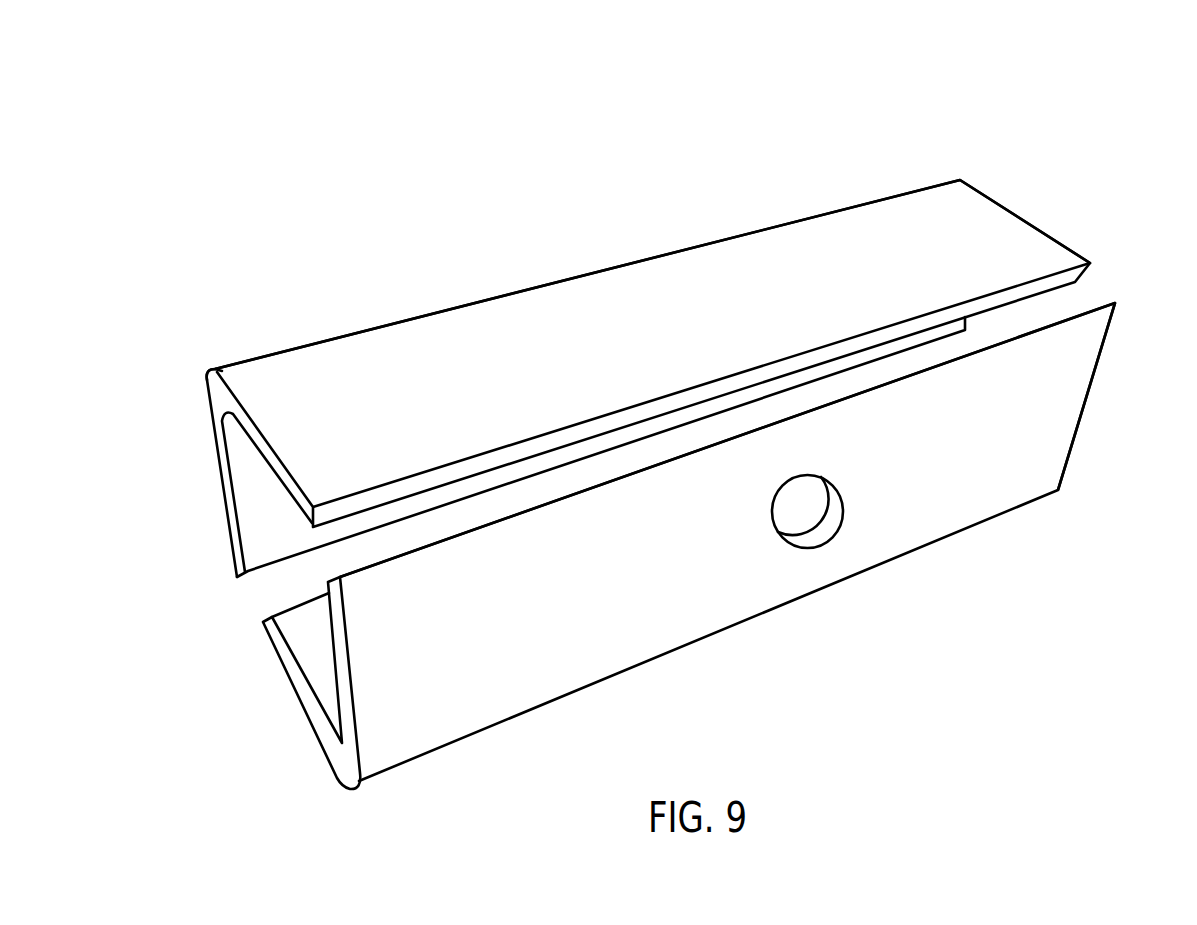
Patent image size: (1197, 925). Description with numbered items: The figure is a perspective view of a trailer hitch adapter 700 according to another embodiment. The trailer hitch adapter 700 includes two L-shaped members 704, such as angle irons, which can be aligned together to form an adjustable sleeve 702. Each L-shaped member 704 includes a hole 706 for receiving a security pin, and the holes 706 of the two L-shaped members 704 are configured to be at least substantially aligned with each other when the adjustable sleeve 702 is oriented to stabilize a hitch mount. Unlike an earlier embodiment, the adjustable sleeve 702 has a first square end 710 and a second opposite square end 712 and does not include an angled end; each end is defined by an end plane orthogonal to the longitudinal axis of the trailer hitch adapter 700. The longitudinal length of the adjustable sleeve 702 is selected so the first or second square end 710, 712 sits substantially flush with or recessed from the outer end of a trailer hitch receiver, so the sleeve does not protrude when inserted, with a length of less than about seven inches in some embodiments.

The trailer hitch adapter 700 is at (530, 86).
The adjustable sleeve 702 is at (290, 286).
The L-shaped member 704 is at (1017, 235).
The hole 706 is at (811, 542).
The first square end 710 is at (217, 407).
The second square end 712 is at (1105, 342).